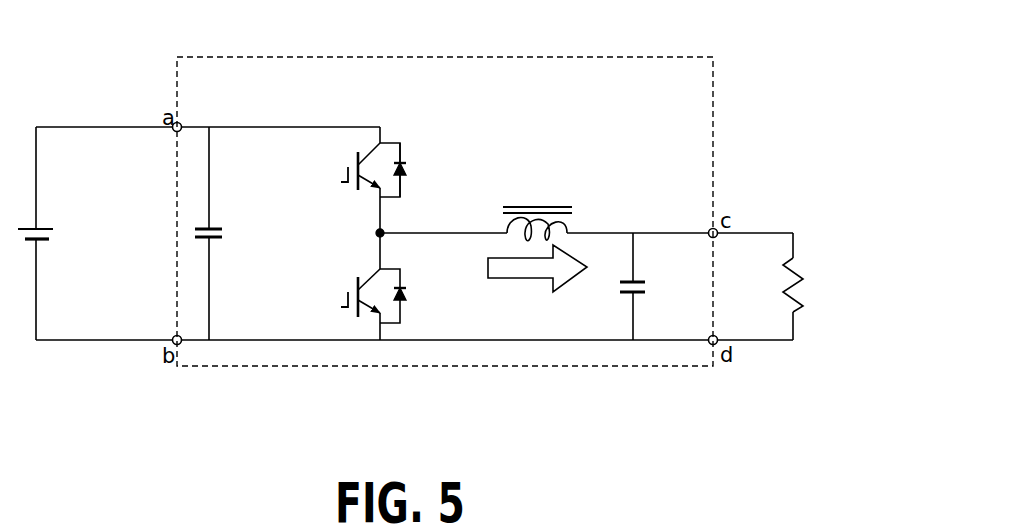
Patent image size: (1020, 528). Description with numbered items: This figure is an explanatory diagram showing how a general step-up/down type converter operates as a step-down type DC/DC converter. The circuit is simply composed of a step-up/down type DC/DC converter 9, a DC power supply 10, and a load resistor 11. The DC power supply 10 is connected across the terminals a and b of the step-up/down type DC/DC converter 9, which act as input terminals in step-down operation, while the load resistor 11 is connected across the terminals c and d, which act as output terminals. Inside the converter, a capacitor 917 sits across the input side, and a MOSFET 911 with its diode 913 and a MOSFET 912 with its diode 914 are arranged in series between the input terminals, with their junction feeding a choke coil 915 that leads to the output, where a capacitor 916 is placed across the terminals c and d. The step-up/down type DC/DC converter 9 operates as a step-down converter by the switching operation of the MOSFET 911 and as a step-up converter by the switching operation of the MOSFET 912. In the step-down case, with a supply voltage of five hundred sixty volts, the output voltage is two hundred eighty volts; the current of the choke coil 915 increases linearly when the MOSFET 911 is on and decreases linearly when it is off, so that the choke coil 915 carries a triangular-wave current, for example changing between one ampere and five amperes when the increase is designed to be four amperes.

The step-up/down type DC/DC converter 9 is at (670, 57).
The DC power supply 10 is at (40, 228).
The load resistor 11 is at (798, 268).
The MOSFET 911 is at (336, 165).
The MOSFET 912 is at (336, 292).
The diode 913 is at (404, 163).
The lower freewheel diode 914 is at (404, 288).
The choke coil 915 is at (579, 202).
The capacitor 916 is at (638, 281).
The capacitor 917 is at (215, 228).